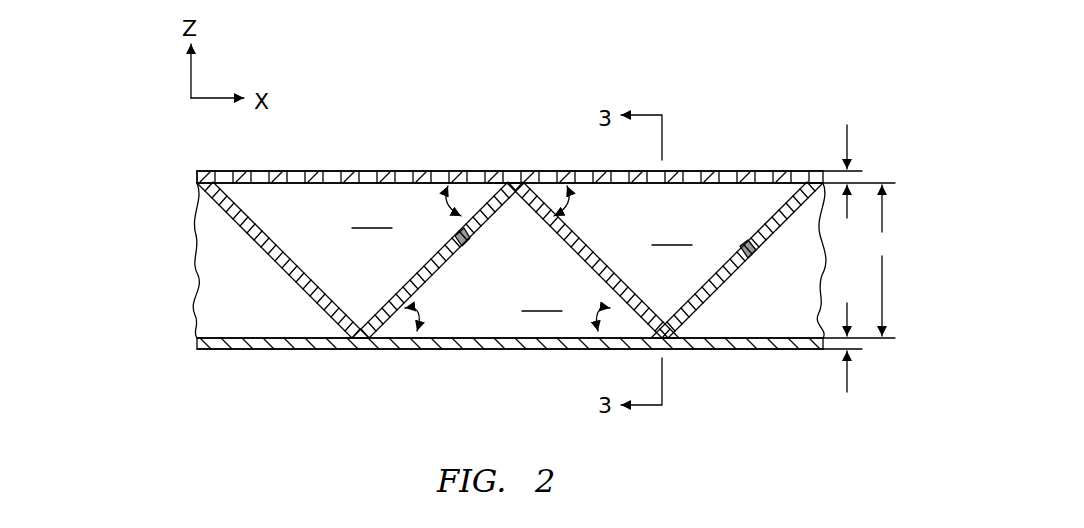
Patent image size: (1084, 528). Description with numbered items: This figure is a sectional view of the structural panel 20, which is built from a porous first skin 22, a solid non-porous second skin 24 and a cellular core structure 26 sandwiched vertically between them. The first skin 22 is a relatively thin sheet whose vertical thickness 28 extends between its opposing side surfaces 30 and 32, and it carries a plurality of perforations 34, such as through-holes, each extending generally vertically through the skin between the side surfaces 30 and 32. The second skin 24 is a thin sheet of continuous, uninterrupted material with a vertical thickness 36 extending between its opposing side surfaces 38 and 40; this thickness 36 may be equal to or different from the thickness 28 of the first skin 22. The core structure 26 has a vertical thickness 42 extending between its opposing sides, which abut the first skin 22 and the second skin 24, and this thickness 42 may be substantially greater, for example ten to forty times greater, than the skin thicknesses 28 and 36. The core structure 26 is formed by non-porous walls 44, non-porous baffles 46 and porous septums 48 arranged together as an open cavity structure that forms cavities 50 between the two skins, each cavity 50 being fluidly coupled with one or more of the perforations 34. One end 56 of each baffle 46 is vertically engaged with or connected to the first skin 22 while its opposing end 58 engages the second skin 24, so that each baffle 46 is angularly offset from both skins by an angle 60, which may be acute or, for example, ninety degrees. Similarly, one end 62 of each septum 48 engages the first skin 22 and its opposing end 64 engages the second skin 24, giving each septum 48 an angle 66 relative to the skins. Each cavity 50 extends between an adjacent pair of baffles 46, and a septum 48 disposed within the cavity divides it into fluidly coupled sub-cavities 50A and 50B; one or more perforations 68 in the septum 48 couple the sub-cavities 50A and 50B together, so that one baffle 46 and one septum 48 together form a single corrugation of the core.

The structural panel 20 is at (745, 87).
The first skin 22 is at (476, 175).
The second skin 24 is at (493, 348).
The core structure 26 is at (150, 182).
The vertical thickness 28 is at (847, 128).
The side surface 30 is at (207, 171).
The side surface 32 is at (206, 190).
The perforations 34 is at (333, 171).
The vertical thickness 36 is at (846, 385).
The side surface 38 is at (228, 337).
The side surface 40 is at (218, 350).
The vertical thickness 42 is at (883, 260).
The non-porous walls 44 is at (822, 262).
The non-porous baffles 46 is at (294, 277).
The porous septums 48 is at (429, 279).
The cavities 50 is at (584, 196).
The sub-cavity 50A is at (523, 224).
The sub-cavity 50B is at (543, 298).
The end of baffle 56 is at (507, 182).
The end of baffle 58 is at (352, 350).
The angle 60 is at (566, 212).
The end of septum 62 is at (815, 171).
The end of septum 64 is at (665, 350).
The angle 66 is at (456, 214).
The perforations 68 is at (463, 244).